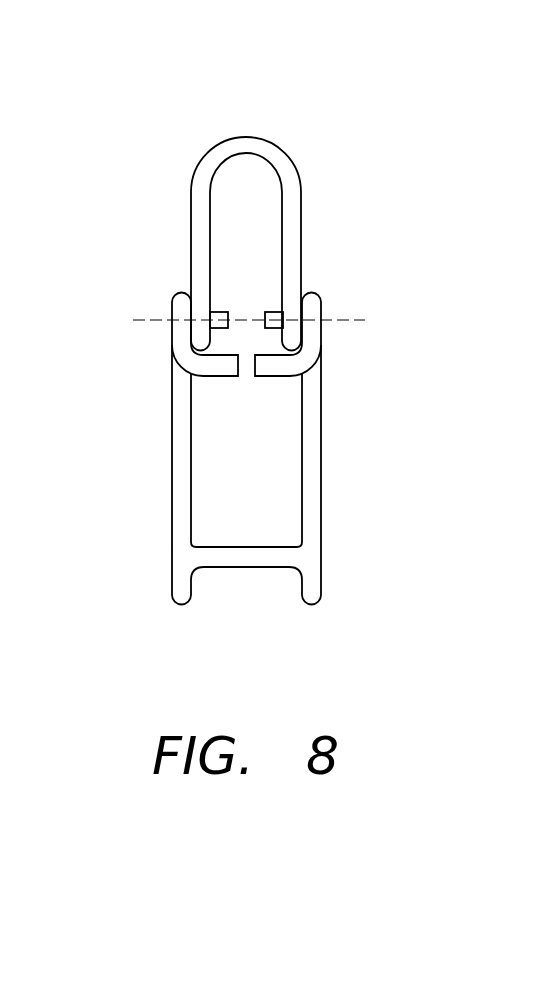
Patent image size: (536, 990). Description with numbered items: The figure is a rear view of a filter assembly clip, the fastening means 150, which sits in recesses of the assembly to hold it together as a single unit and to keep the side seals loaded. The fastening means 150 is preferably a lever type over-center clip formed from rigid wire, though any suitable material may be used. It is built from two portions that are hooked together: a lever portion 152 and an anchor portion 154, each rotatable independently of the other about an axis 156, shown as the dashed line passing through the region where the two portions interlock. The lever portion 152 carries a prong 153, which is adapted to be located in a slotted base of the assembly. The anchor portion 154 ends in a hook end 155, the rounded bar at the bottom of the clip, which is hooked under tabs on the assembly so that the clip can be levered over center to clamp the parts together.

The fastening means 150 is at (342, 212).
The lever portion 152 is at (218, 148).
The prong 153 is at (268, 377).
The anchor portion 154 is at (321, 517).
The hook end 155 is at (247, 567).
The axis 156 is at (152, 320).